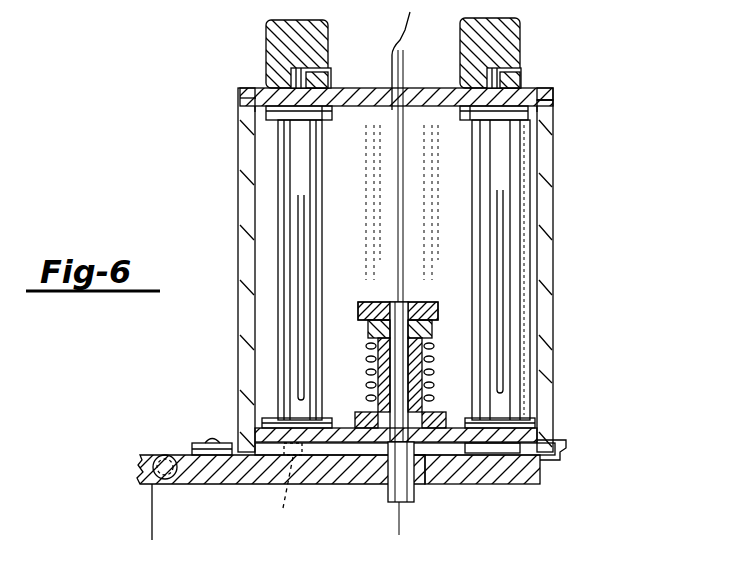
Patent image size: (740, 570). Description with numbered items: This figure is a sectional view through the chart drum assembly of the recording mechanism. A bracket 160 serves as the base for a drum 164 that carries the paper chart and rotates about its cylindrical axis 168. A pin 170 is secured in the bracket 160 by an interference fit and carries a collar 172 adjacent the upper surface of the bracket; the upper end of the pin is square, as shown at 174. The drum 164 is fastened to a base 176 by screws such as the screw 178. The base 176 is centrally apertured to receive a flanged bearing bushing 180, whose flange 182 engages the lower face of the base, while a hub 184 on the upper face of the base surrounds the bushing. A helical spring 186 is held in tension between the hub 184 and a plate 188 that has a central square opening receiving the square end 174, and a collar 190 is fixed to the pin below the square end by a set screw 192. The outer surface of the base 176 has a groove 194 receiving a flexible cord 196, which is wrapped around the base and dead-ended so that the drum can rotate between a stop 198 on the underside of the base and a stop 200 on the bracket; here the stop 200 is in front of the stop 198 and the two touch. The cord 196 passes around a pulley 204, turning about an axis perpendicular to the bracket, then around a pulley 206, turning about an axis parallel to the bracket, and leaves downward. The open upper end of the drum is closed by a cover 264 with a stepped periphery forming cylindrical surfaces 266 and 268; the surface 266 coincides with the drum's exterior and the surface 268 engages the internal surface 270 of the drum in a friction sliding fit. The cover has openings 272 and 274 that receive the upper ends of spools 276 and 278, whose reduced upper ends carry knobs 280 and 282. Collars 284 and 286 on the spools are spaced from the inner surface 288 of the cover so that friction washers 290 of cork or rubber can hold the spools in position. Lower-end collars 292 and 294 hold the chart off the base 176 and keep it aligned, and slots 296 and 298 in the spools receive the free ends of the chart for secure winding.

The bracket 160 is at (527, 452).
The drum 164 is at (553, 173).
The cylindrical axis 168 is at (422, 55).
The pin 170 is at (387, 470).
The collar 172 is at (442, 455).
The square end 174 is at (400, 302).
The base 176 is at (500, 457).
The screw 178 is at (548, 445).
The flanged bearing bushing 180 is at (430, 372).
The flange 182 is at (440, 443).
The hub 184 is at (362, 412).
The helical spring 186 is at (371, 359).
The plate 188 is at (360, 302).
The collar 190 is at (368, 335).
The set screw 192 is at (432, 333).
The groove 194 is at (566, 450).
The flexible cord 196 is at (152, 527).
The stop 198 is at (288, 492).
The stop 200 is at (249, 484).
The pulley 204 is at (230, 433).
The pulley 206 is at (157, 452).
The cover 264 is at (331, 88).
The cylindrical surface 266 is at (553, 92).
The cylindrical surface 268 is at (553, 103).
The internal surface 270 is at (535, 210).
The opening 272 is at (283, 93).
The opening 274 is at (493, 92).
The spool 276 is at (278, 172).
The spool 278 is at (510, 260).
The knob 280 is at (268, 48).
The knob 282 is at (429, 176).
The collar 284 is at (325, 120).
The collar 286 is at (467, 120).
The inner surface 288 is at (410, 94).
The friction washers 290 is at (263, 107).
The lower-end collar 292 is at (258, 398).
The lower-end collar 294 is at (525, 422).
The slot 296 is at (300, 232).
The slot 298 is at (500, 300).